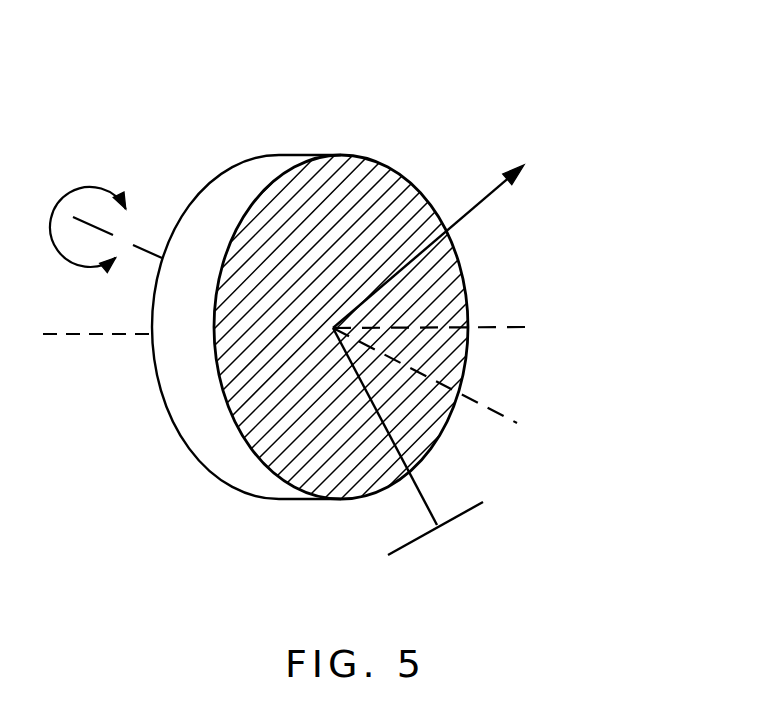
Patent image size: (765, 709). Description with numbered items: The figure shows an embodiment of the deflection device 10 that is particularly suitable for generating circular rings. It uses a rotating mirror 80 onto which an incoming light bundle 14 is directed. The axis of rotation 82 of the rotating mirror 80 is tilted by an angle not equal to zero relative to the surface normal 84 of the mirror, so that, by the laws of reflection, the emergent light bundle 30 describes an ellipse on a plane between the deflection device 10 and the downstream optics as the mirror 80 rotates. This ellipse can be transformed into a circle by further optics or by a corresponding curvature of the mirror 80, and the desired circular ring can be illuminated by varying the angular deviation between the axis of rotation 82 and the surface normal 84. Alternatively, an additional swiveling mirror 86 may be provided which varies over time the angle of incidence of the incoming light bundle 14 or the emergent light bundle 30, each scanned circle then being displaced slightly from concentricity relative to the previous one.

The deflection device 10 is at (432, 122).
The incoming light bundle 14 is at (413, 488).
The rotating mirror 80 is at (293, 225).
The emergent light bundle 30 is at (490, 202).
The surface normal 84 is at (503, 322).
The axis of rotation 82 is at (517, 416).
The swiveling mirror 86 is at (478, 510).